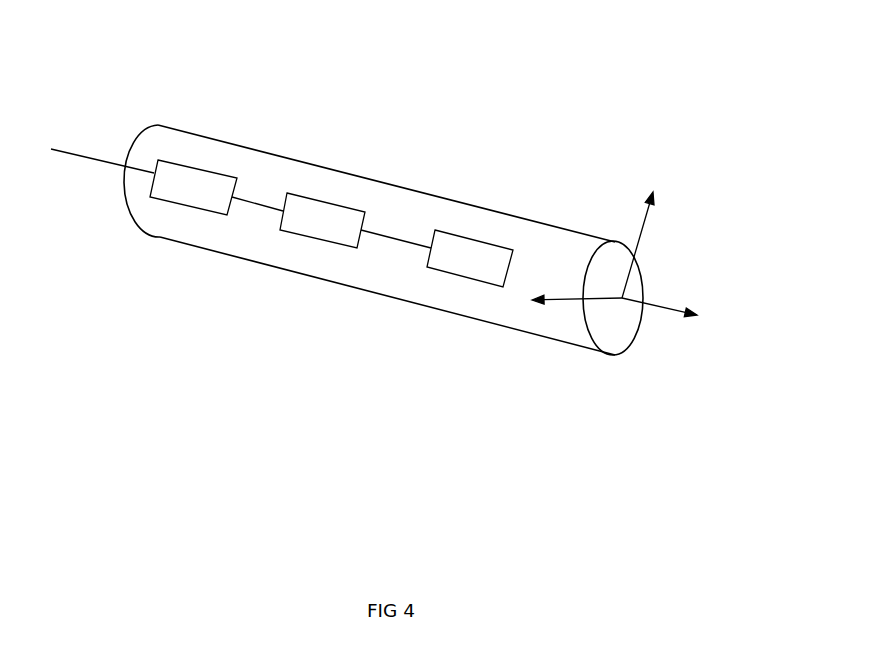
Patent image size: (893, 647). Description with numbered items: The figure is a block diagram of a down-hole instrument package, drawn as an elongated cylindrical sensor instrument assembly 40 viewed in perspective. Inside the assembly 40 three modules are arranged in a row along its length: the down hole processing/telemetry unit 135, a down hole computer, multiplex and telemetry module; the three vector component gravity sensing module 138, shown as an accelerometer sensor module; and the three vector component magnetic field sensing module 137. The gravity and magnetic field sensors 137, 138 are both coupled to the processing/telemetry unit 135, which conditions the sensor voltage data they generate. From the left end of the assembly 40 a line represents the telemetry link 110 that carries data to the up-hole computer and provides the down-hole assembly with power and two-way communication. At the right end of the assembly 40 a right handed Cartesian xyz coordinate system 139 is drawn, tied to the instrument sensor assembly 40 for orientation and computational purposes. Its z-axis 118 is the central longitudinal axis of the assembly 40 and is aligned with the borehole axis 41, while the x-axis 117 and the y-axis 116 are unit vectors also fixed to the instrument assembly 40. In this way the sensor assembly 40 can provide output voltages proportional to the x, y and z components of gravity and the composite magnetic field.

The sensor instrument assembly 40 is at (321, 295).
The borehole axis 41 is at (622, 315).
The telemetry link 110 is at (93, 178).
The y-axis 116 is at (571, 313).
The x-axis 117 is at (664, 243).
The z-axis 118 is at (736, 357).
The down hole processing/telemetry unit 135 is at (188, 150).
The magnetic field sensing module 137 is at (491, 227).
The gravity sensing module 138 is at (321, 188).
The xyz coordinate system 139 is at (651, 320).